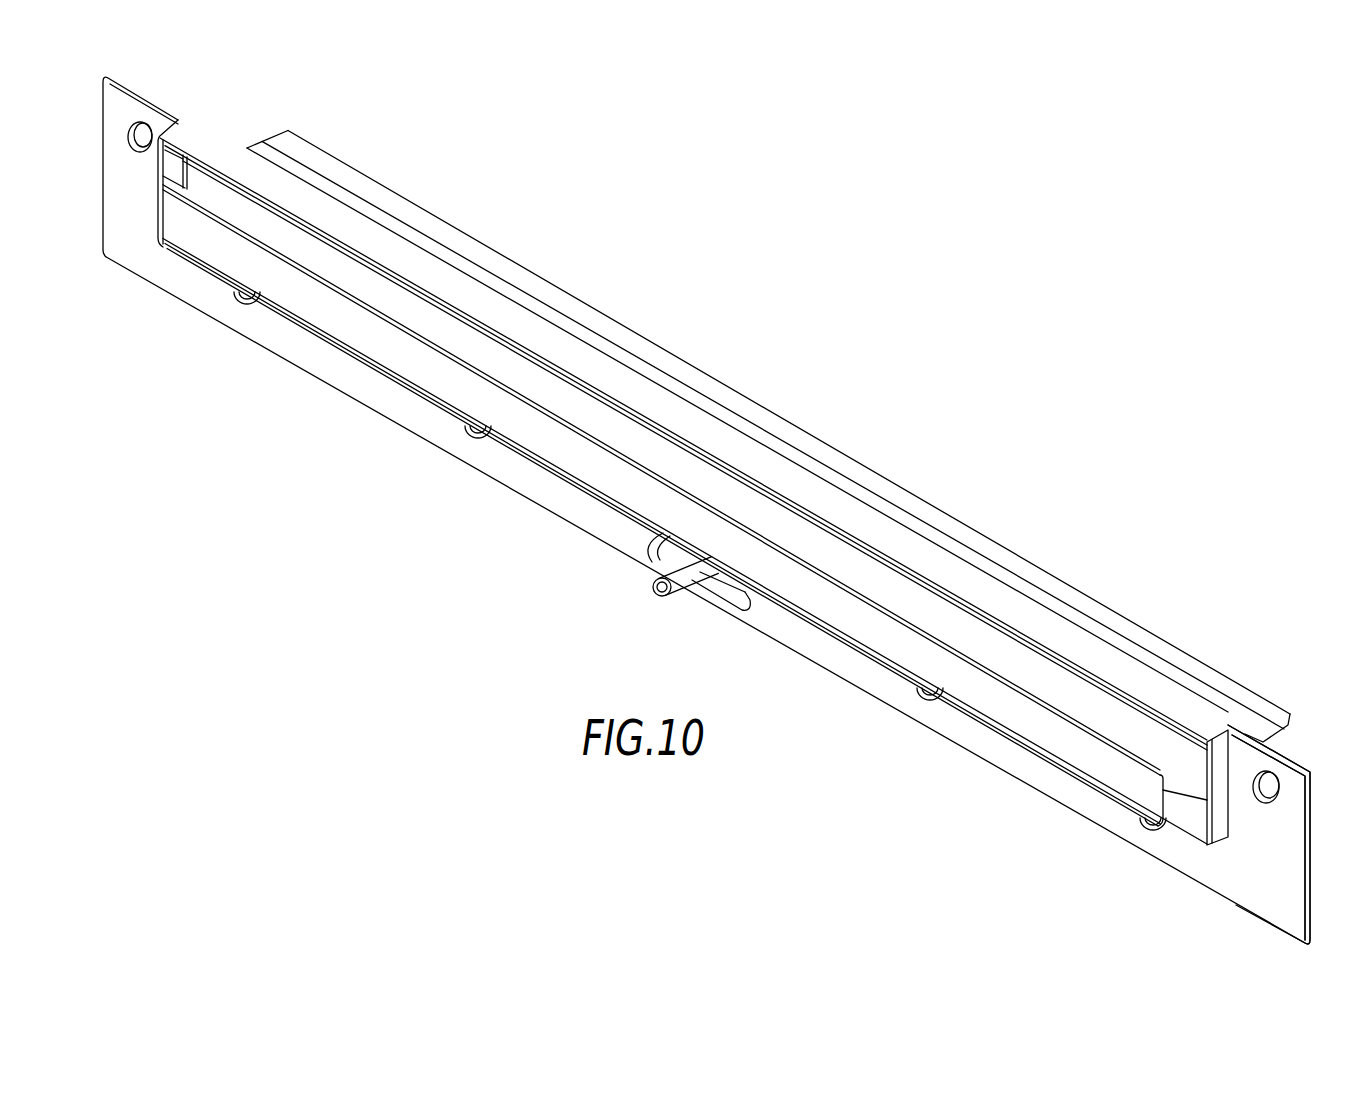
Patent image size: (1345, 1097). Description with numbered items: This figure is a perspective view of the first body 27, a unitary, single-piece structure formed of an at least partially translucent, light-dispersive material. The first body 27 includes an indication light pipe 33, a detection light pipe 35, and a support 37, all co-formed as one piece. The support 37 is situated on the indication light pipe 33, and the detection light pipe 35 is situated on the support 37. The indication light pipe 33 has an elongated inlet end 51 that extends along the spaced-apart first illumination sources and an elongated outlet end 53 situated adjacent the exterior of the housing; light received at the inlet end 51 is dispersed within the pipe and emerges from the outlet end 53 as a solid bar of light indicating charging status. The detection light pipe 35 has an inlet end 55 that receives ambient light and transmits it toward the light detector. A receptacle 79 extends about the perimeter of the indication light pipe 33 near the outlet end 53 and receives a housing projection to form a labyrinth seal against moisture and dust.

The first body 27 is at (724, 500).
The indication light pipe 33 is at (1060, 730).
The detection light pipe 35 is at (682, 598).
The support 37 is at (737, 598).
The inlet end 51 is at (1287, 723).
The outlet end 53 is at (1005, 700).
The inlet end 55 is at (655, 588).
The receptacle 79 is at (1190, 817).